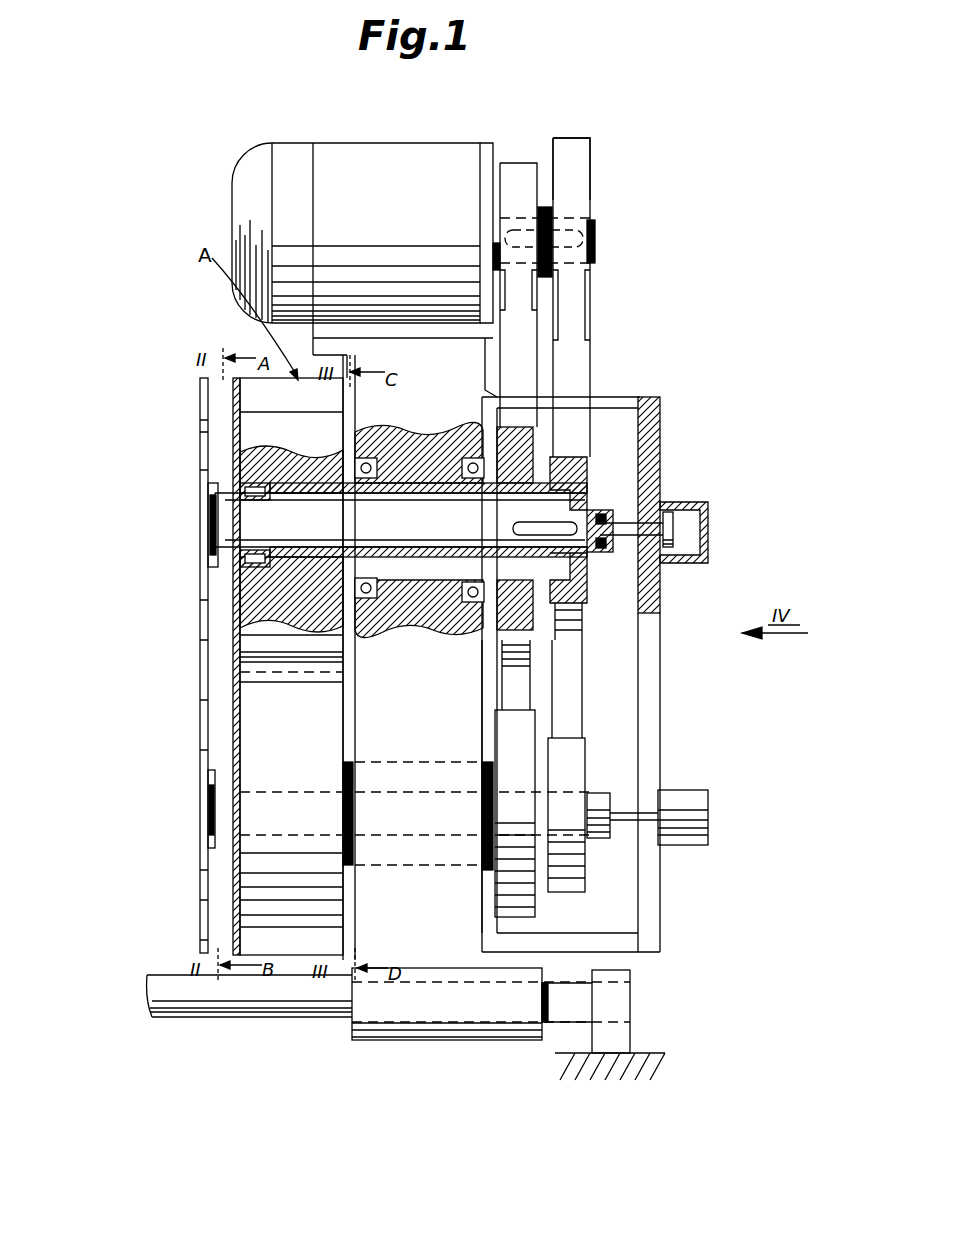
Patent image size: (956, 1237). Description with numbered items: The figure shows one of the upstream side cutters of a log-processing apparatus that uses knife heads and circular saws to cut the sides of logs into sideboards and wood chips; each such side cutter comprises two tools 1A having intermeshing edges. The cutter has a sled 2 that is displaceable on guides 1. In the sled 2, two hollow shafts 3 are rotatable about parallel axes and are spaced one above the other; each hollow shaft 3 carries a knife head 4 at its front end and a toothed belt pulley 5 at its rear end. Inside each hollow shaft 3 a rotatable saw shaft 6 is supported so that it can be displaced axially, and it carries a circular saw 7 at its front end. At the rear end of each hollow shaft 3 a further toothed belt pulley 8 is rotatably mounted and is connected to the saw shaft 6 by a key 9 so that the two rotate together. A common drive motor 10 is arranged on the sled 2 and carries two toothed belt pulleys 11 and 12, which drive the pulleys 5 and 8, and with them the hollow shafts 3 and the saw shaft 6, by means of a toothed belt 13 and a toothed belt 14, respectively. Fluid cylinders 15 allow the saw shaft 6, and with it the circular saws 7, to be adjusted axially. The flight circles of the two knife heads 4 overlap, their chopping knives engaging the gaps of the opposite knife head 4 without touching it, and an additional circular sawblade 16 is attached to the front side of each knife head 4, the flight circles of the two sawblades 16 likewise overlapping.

The guides 1 is at (323, 1000).
The tool 1A is at (232, 578).
The sled 2 is at (420, 993).
The hollow shaft 3 is at (438, 476).
The knife head 4 is at (275, 430).
The toothed belt pulley 5 is at (530, 440).
The saw shaft 6 is at (237, 512).
The circular saw 7 is at (202, 520).
The toothed belt pulley 8 is at (565, 475).
The key 9 is at (578, 550).
The common drive motor 10 is at (356, 152).
The toothed belt pulley 11 is at (510, 160).
The toothed belt pulley 12 is at (590, 150).
The toothed belt 13 is at (517, 337).
The toothed belt 14 is at (572, 368).
The fluid cylinder 15 is at (670, 533).
The circular sawblade 16 is at (235, 877).